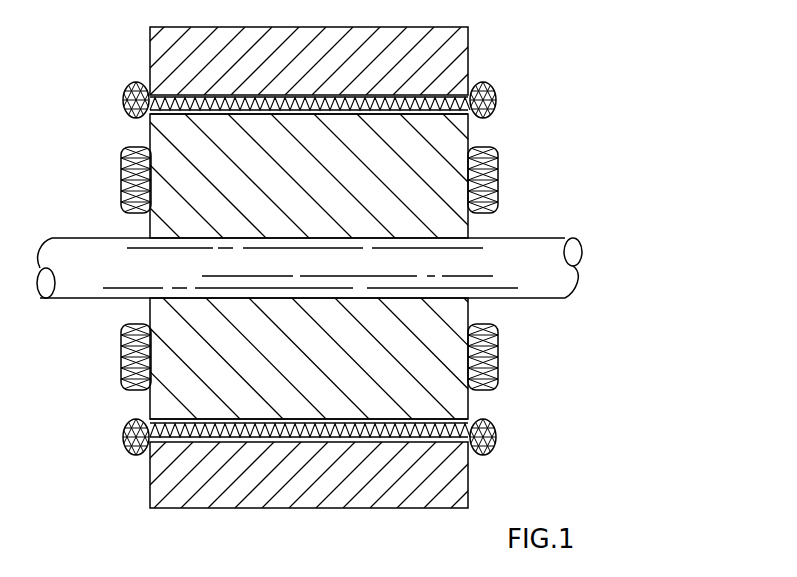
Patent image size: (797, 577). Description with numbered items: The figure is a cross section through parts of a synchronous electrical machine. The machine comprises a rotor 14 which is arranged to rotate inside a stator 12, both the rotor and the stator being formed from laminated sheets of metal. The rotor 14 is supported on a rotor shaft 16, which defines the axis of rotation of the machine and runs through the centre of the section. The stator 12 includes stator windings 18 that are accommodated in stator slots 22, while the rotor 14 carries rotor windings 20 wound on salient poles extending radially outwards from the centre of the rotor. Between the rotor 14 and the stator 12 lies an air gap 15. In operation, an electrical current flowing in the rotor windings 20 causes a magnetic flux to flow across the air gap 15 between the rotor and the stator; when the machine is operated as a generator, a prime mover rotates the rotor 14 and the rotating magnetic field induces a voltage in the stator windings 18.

The stator 12 is at (168, 55).
The rotor 14 is at (440, 135).
The air gap 15 is at (157, 120).
The rotor shaft 16 is at (553, 283).
The stator windings 18 is at (497, 100).
The rotor windings 20 is at (497, 195).
The stator slots 22 is at (472, 83).